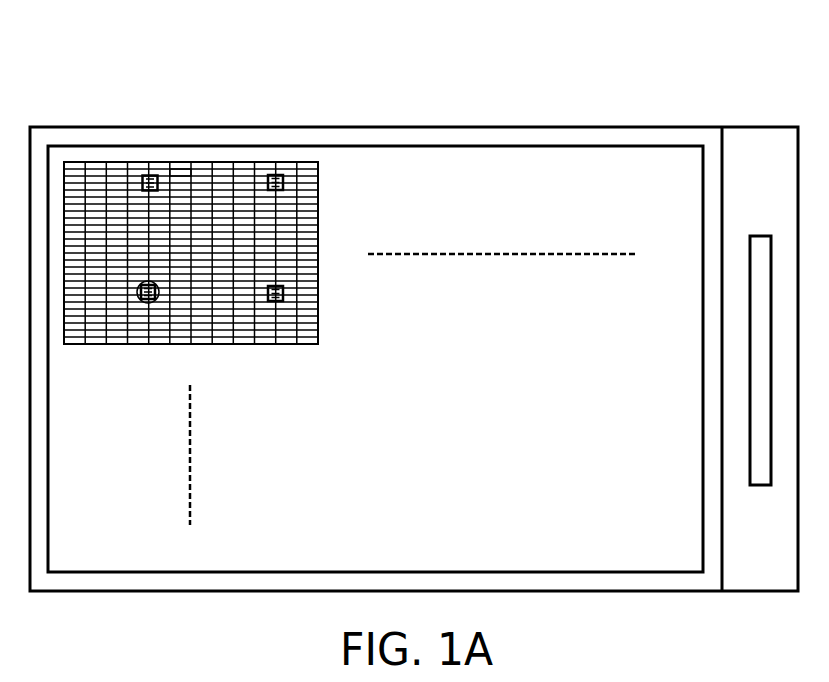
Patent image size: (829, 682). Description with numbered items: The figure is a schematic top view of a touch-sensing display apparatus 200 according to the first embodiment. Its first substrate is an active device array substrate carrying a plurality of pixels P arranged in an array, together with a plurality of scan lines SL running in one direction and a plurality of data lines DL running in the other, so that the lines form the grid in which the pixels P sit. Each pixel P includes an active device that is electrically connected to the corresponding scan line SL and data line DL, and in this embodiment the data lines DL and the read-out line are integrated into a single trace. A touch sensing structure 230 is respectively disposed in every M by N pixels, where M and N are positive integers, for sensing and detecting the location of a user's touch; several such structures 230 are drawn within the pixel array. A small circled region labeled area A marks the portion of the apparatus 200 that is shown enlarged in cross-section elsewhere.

The touch-sensing display apparatus 200 is at (790, 643).
The scan line SL is at (77, 166).
The data line DL is at (107, 165).
The touch sensing structure 230 is at (156, 168).
The pixel P is at (180, 170).
The enlarged area A is at (146, 304).